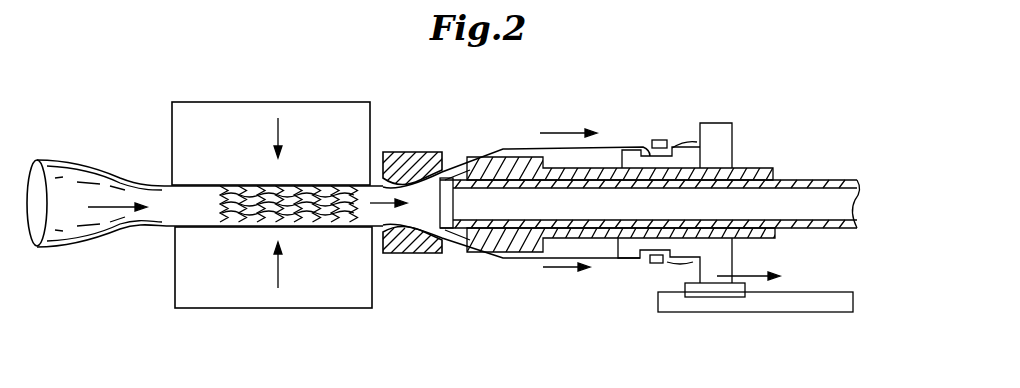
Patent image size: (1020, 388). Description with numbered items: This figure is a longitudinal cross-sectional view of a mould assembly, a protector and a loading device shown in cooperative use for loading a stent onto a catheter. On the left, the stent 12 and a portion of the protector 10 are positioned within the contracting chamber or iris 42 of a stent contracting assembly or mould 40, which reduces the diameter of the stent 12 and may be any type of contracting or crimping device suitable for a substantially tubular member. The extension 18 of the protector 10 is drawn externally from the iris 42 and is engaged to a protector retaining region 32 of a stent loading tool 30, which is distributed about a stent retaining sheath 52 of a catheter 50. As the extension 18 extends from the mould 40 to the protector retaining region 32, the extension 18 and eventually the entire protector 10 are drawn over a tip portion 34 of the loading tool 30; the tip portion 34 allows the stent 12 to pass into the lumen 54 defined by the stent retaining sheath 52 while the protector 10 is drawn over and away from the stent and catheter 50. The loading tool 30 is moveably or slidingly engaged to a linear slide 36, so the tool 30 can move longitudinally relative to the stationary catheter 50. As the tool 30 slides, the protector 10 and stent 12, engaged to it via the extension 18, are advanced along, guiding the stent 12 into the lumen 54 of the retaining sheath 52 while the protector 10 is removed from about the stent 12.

The protector 10 is at (135, 195).
The stent 12 is at (332, 195).
The extension 18 is at (607, 145).
The stent loading tool 30 is at (713, 135).
The protector retaining region 32 is at (650, 165).
The tip portion 34 is at (470, 170).
The linear slide 36 is at (802, 300).
The mould 40 is at (243, 282).
The iris 42 is at (210, 223).
The catheter 50 is at (823, 180).
The stent retaining sheath 52 is at (805, 180).
The lumen 54 is at (835, 203).